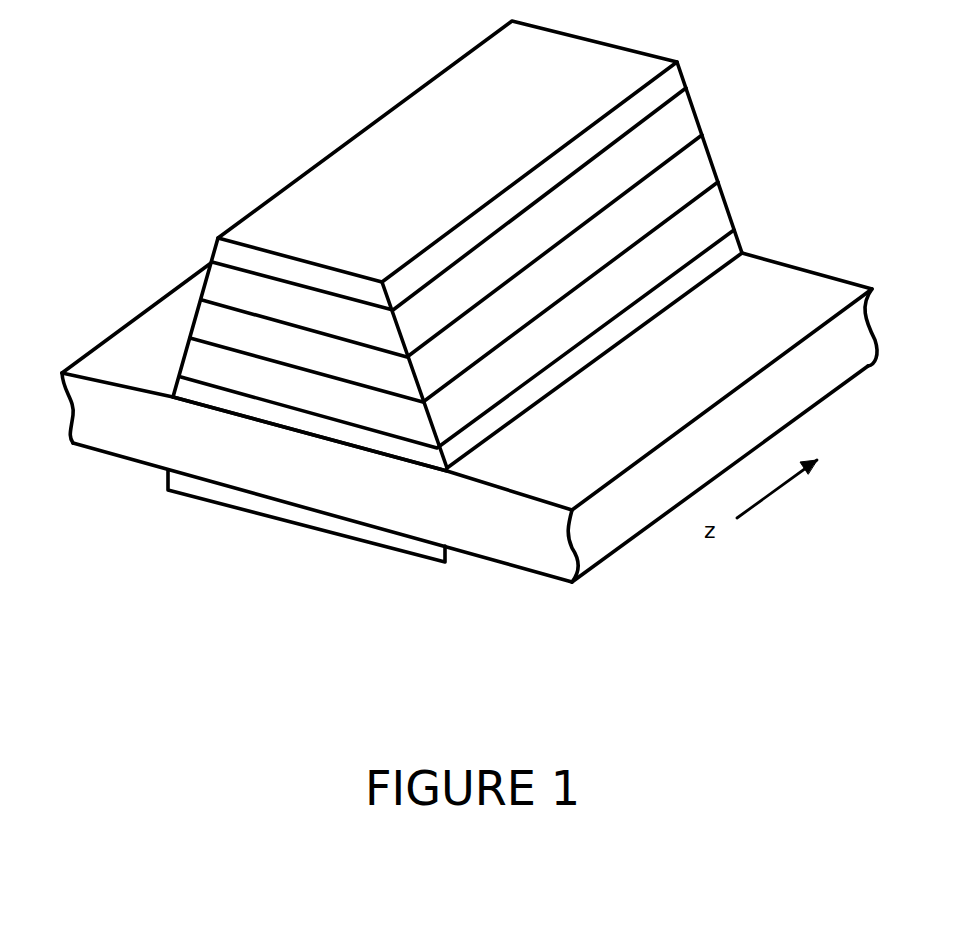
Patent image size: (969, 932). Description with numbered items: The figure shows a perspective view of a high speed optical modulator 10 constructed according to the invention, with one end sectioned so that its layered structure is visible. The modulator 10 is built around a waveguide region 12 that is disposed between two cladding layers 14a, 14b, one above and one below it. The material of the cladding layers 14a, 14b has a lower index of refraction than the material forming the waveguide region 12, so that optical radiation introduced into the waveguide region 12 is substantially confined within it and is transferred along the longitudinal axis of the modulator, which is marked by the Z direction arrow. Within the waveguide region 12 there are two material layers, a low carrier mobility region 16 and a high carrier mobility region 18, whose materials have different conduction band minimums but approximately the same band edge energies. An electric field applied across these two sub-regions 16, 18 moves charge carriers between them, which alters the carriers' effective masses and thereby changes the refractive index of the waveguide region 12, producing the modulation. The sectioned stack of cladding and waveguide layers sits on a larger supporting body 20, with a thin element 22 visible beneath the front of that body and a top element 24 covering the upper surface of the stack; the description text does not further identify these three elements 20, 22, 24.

The optical modulator 10 is at (273, 183).
The waveguide region 12 is at (181, 383).
The cladding layer 14a is at (350, 435).
The cladding layer 14b is at (220, 290).
The low carrier mobility region 16 is at (310, 395).
The high carrier mobility region 18 is at (255, 337).
The substrate 20 is at (495, 518).
The bottom electrode 22 is at (380, 535).
The top electrode 24 is at (430, 118).